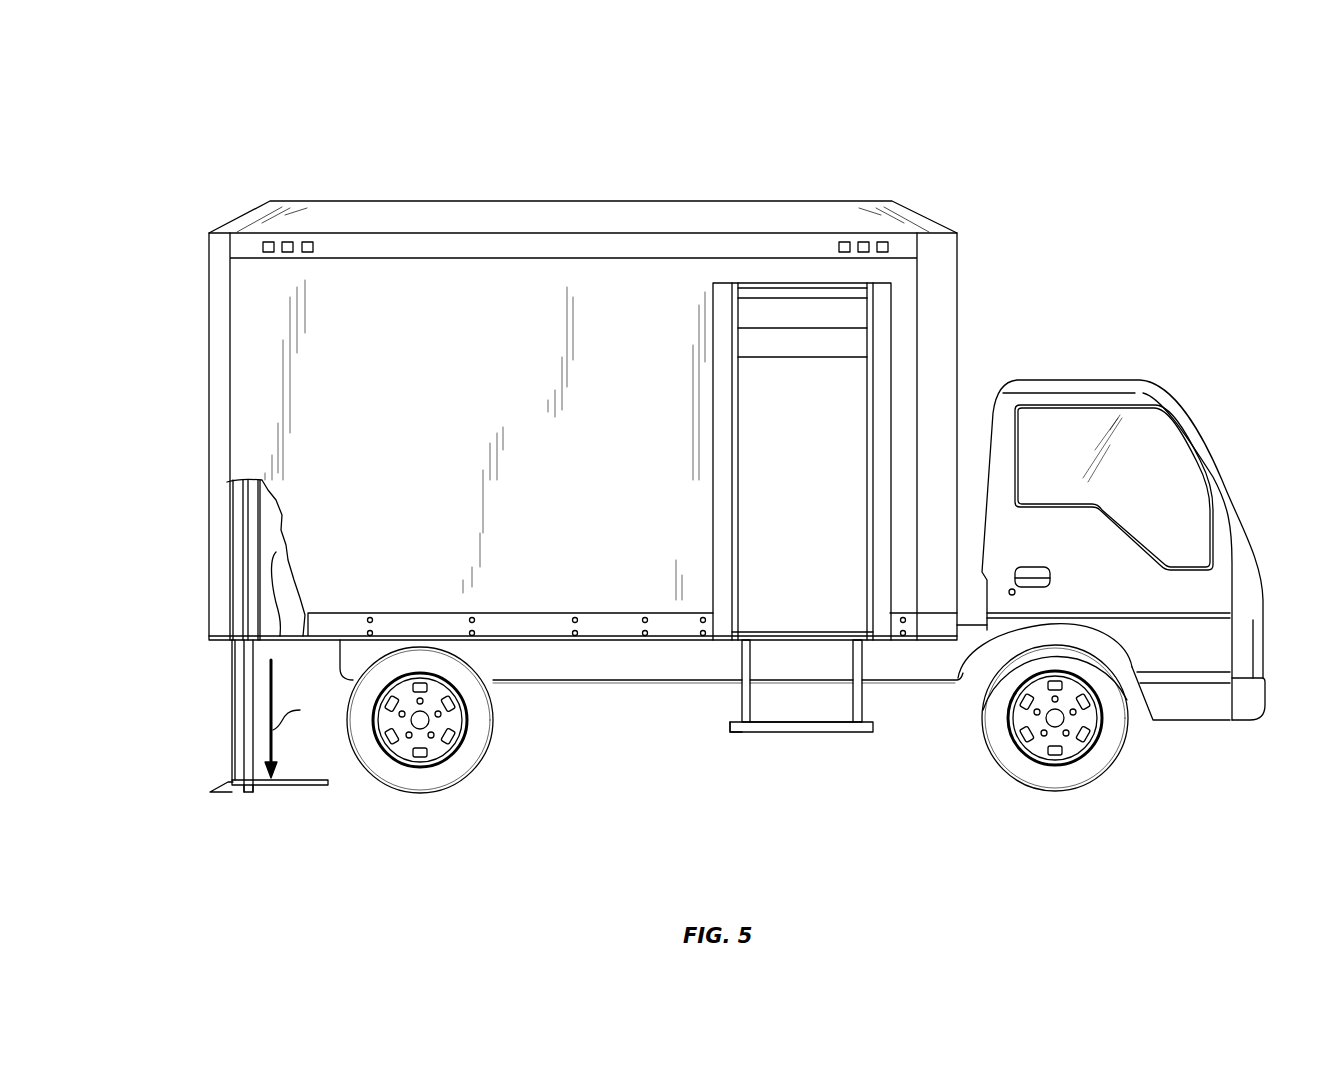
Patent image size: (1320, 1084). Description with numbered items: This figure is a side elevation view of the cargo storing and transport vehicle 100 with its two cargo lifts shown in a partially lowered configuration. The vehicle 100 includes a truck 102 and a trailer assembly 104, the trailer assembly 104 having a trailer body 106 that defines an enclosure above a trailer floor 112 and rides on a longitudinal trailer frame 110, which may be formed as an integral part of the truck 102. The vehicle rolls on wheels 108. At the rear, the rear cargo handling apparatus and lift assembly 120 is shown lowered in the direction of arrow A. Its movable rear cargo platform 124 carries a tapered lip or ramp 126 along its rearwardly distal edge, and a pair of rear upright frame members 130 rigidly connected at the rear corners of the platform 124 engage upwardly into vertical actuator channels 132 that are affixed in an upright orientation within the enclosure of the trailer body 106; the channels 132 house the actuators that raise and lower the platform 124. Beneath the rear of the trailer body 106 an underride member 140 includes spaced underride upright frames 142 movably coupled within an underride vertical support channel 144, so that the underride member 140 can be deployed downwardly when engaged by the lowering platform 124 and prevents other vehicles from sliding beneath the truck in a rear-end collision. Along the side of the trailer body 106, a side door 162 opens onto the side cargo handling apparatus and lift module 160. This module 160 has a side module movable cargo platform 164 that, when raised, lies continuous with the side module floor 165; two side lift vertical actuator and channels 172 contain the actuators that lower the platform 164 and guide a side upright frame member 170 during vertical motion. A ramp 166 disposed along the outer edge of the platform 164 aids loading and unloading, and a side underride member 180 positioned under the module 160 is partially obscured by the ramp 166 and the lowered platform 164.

The cargo storing and transport vehicle 100 is at (1043, 158).
The truck 102 is at (1097, 383).
The trailer assembly 104 is at (303, 172).
The trailer body 106 is at (555, 228).
The wheel 108 is at (463, 763).
The longitudinal trailer frame 110 is at (588, 663).
The trailer floor 112 is at (273, 558).
The rear cargo handling apparatus and lift assembly 120 is at (195, 805).
The movable rear cargo platform 124 is at (318, 786).
The tapered lip or ramp 126 is at (225, 782).
The rear upright frame members 130 is at (236, 667).
The vertical actuator channels 132 is at (237, 502).
The underride member 140 is at (253, 795).
The underride upright frames 142 is at (250, 709).
The underride vertical support channel 144 is at (250, 562).
The side cargo handling apparatus and lift module 160 is at (866, 770).
The side door 162 is at (790, 315).
The side module movable cargo platform 164 is at (790, 720).
The side module floor 165 is at (788, 632).
The ramp 166 is at (820, 727).
The side upright frame member 170 is at (745, 692).
The side lift vertical actuator and channels 172 is at (865, 443).
The side underride member 180 is at (745, 727).